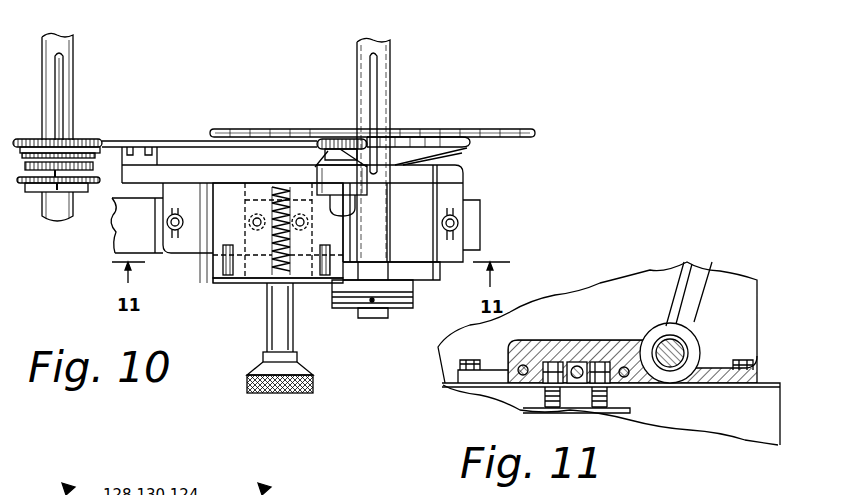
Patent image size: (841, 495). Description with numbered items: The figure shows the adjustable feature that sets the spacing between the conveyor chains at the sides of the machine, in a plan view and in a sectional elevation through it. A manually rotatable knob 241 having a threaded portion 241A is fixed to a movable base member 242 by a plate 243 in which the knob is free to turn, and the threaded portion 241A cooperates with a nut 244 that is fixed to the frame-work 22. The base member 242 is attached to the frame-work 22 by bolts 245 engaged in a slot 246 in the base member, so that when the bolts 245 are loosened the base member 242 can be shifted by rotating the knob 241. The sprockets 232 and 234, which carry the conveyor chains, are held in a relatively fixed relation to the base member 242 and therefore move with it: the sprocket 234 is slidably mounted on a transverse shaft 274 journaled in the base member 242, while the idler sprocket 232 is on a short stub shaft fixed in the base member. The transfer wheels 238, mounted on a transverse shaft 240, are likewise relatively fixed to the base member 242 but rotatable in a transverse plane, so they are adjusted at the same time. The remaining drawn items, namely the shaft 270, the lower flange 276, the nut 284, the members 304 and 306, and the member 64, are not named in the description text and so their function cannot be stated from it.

In FIG. 10, the frame-work 22 is at (482, 227).
In FIG. 11, the frame-work 22 is at (672, 420).
In FIG. 10, the sprocket 232 is at (335, 139).
In FIG. 10, the sprocket 234 is at (80, 140).
In FIG. 10, the transfer wheel 238 is at (490, 132).
In FIG. 10, the transverse shaft 240 is at (388, 76).
In FIG. 10, the manually rotatable knob 241 is at (292, 393).
In FIG. 10, the threaded portion 241A is at (273, 252).
In FIG. 11, the threaded portion 241A is at (582, 362).
In FIG. 10, the movable base member 242 is at (214, 245).
In FIG. 11, the movable base member 242 is at (627, 292).
In FIG. 10, the plate 243 is at (237, 287).
In FIG. 10, the nut 244 is at (247, 208).
In FIG. 11, the nut 244 is at (575, 362).
In FIG. 10, the bolt 245 is at (178, 216).
In FIG. 11, the bolt 245 is at (456, 358).
In FIG. 10, the slot 246 is at (176, 236).
In FIG. 11, the shaft 270 is at (680, 350).
In FIG. 10, the transverse shaft 274 is at (72, 61).
In FIG. 10, the lower flange 276 is at (40, 193).
In FIG. 10, the nut 284 is at (323, 140).
In FIG. 10, the member 304 is at (40, 494).
In FIG. 10, the member 306 is at (51, 494).
In FIG. 10, the member 64 is at (70, 485).